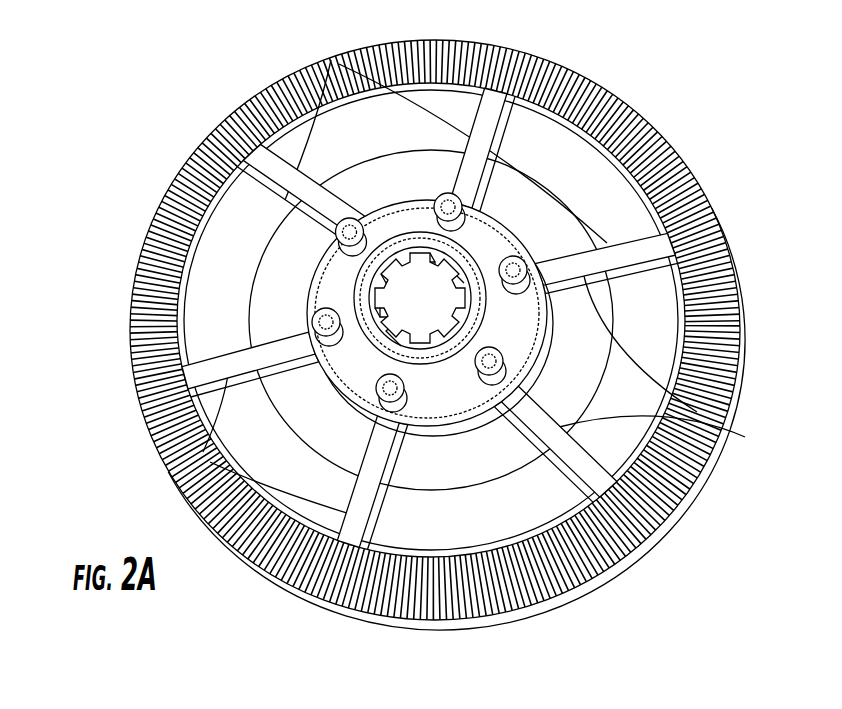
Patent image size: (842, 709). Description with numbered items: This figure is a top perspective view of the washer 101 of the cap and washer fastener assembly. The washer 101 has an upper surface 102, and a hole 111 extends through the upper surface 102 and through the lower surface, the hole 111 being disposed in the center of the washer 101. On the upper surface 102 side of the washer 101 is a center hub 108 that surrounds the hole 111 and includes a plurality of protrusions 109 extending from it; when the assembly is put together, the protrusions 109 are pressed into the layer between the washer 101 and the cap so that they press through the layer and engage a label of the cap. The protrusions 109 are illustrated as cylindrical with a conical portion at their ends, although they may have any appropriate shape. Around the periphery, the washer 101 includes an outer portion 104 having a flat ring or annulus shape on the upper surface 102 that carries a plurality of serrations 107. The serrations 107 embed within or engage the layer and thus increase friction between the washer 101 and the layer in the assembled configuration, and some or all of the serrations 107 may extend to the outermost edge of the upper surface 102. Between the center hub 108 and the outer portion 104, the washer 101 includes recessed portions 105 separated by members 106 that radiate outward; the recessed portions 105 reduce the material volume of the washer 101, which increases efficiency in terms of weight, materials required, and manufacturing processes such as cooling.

The washer 101 is at (200, 72).
The upper surface 102 is at (583, 157).
The outer portion 104 is at (130, 280).
The recessed portions 105 is at (414, 193).
The members 106 is at (339, 64).
The serrations 107 is at (680, 493).
The center hub 108 is at (466, 403).
The protrusions 109 is at (521, 265).
The hole 111 is at (413, 305).